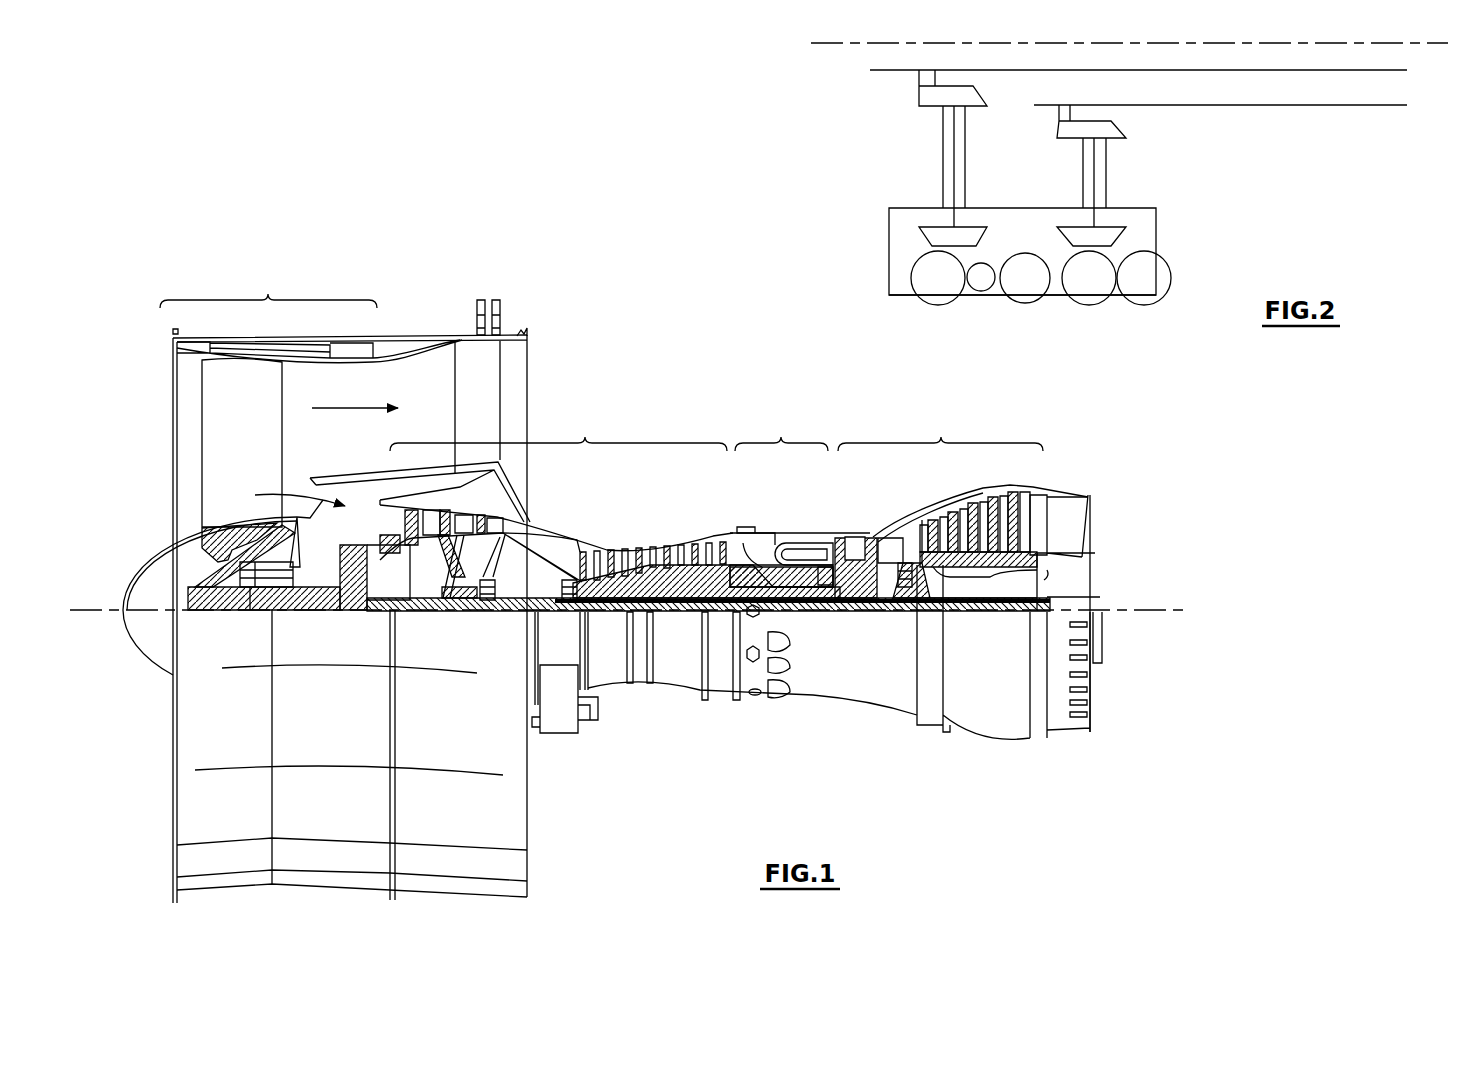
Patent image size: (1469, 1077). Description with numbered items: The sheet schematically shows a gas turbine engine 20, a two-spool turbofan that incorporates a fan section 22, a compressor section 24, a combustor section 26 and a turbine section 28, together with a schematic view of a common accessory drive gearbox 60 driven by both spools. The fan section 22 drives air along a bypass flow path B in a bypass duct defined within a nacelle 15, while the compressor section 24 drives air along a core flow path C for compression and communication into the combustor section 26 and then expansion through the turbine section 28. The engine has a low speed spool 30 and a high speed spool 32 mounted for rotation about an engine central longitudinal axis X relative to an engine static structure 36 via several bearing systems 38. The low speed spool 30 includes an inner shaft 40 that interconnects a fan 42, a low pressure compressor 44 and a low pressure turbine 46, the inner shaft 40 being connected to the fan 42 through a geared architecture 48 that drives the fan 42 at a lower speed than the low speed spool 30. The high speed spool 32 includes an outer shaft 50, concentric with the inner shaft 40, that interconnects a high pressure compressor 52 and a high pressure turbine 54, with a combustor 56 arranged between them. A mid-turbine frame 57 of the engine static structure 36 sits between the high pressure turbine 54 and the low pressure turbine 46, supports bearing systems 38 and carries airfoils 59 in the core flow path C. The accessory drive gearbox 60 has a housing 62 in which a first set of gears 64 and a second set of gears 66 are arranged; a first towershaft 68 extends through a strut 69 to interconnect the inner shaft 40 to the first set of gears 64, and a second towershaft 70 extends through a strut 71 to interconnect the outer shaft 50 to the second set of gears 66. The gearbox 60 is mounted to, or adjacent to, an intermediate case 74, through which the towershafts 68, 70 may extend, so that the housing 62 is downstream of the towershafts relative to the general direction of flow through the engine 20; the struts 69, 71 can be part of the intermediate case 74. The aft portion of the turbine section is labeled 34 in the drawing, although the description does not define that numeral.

In FIG. 1, the nacelle 15 is at (380, 338).
In FIG. 1, the gas turbine engine 20 is at (808, 380).
In FIG. 2, the gas turbine engine 20 is at (792, 197).
In FIG. 1, the fan section 22 is at (268, 286).
In FIG. 1, the compressor section 24 is at (558, 428).
In FIG. 1, the combustor section 26 is at (781, 428).
In FIG. 1, the turbine section 28 is at (940, 428).
In FIG. 1, the low speed spool 30 is at (680, 622).
In FIG. 1, the high speed spool 32 is at (723, 560).
In FIG. 1, the exhaust / low pressure turbine 34 is at (1043, 573).
In FIG. 1, the engine static structure 36 is at (720, 700).
In FIG. 1, the bearing systems 38 is at (250, 613).
In FIG. 1, the inner shaft 40 is at (532, 600).
In FIG. 2, the inner shaft 40 is at (886, 71).
In FIG. 1, the fan 42 is at (229, 459).
In FIG. 1, the low pressure compressor 44 is at (462, 517).
In FIG. 1, the low pressure turbine 46 is at (978, 507).
In FIG. 1, the geared architecture 48 is at (355, 610).
In FIG. 1, the outer shaft 50 is at (802, 606).
In FIG. 2, the outer shaft 50 is at (1250, 105).
In FIG. 1, the high pressure compressor 52 is at (652, 550).
In FIG. 1, the high pressure turbine 54 is at (855, 537).
In FIG. 1, the combustor 56 is at (795, 555).
In FIG. 1, the mid-turbine frame 57 is at (893, 537).
In FIG. 1, the airfoils 59 is at (915, 562).
In FIG. 1, the accessory drive gearbox 60 is at (552, 735).
In FIG. 2, the accessory drive gearbox 60 is at (1176, 226).
In FIG. 2, the housing 62 is at (1113, 296).
In FIG. 2, the first set of gears 64 is at (947, 294).
In FIG. 2, the second set of gears 66 is at (1079, 294).
In FIG. 2, the first towershaft 68 is at (949, 147).
In FIG. 2, the strut 69 is at (965, 159).
In FIG. 2, the second towershaft 70 is at (1095, 184).
In FIG. 2, the strut 71 is at (1081, 167).
In FIG. 1, the intermediate case 74 is at (567, 640).
In FIG. 1, the bypass flow path B is at (347, 405).
In FIG. 1, the core flow path C is at (289, 494).
In FIG. 1, the engine central longitudinal axis X is at (1178, 610).
In FIG. 2, the engine central longitudinal axis X is at (1124, 43).